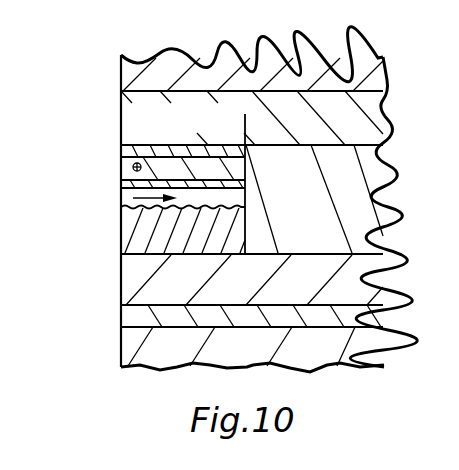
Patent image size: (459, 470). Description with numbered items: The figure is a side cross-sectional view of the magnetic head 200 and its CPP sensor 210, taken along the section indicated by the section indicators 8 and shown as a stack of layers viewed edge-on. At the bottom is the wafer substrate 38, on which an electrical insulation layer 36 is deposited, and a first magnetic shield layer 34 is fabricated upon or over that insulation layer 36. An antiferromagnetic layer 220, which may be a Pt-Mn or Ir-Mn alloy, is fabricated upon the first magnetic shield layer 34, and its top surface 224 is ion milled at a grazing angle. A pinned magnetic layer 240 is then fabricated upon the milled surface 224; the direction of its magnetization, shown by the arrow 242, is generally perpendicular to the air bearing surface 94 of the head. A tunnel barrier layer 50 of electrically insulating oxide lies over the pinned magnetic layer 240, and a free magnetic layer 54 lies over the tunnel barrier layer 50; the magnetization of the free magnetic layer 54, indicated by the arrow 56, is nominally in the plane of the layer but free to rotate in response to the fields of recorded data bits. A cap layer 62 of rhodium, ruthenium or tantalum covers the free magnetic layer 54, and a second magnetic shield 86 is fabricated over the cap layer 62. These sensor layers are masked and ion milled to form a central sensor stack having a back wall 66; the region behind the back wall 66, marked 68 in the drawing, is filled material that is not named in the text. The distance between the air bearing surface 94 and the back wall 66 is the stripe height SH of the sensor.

The magnetic head 200 is at (133, 54).
The CPP sensor 210 is at (204, 51).
The section line 8- 8 is at (89, 218).
The stripe height SH is at (237, 122).
The cap layer 62 is at (247, 142).
The second magnetic shield 86 is at (358, 127).
The arrow indicating magnetization direction of free magnetic layer 56 is at (122, 155).
The free magnetic layer 54 is at (123, 172).
The back wall 66 is at (247, 168).
The tunnel barrier layer 50 is at (247, 195).
The arrow indicating magnetization direction of pinned magnetic layer 242 is at (128, 198).
The pinned magnetic layer 240 is at (122, 207).
The antiferromagnetic layer 220 is at (138, 228).
The top surface of the antiferromagnetic layer 224 is at (248, 203).
The insulating fill layer 68 is at (366, 196).
The air bearing surface 94 is at (122, 265).
The first magnetic shield layer 34 is at (188, 293).
The electrical insulation layer 36 is at (132, 312).
The wafer substrate 38 is at (188, 357).